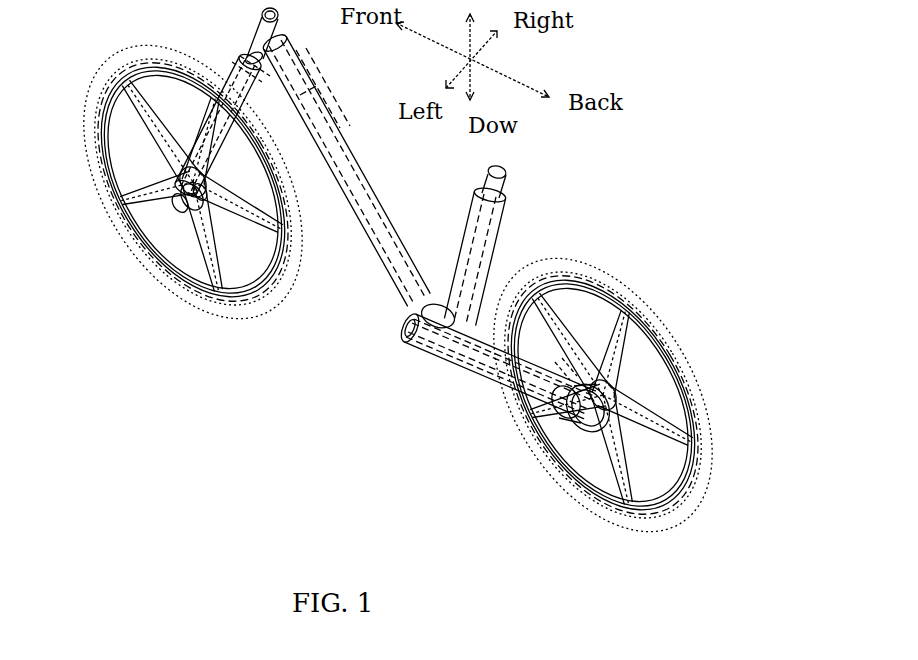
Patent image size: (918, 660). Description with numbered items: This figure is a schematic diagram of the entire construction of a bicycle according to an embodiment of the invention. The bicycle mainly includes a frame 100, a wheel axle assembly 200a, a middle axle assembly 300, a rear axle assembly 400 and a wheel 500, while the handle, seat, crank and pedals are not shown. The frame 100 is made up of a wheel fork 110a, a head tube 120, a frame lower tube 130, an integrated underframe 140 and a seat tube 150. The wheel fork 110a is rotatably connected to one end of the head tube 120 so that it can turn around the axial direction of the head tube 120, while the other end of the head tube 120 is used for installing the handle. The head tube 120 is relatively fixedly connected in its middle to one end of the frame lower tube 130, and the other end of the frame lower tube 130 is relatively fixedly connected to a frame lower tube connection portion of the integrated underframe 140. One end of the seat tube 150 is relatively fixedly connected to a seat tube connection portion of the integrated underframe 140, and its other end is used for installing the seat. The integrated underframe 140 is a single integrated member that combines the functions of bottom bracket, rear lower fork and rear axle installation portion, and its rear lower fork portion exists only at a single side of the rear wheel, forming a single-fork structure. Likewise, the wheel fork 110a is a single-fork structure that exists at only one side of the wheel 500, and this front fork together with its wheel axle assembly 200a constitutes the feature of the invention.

The frame 100 is at (408, 216).
The wheel fork 110a is at (261, 108).
The head tube 120 is at (280, 26).
The frame lower tube 130 is at (358, 162).
The integrated underframe 140 is at (472, 367).
The seat tube 150 is at (497, 240).
The wheel axle assembly 200a is at (170, 188).
The middle axle assembly 300 is at (403, 331).
The rear axle assembly 400 is at (540, 445).
The wheel 500 is at (165, 40).